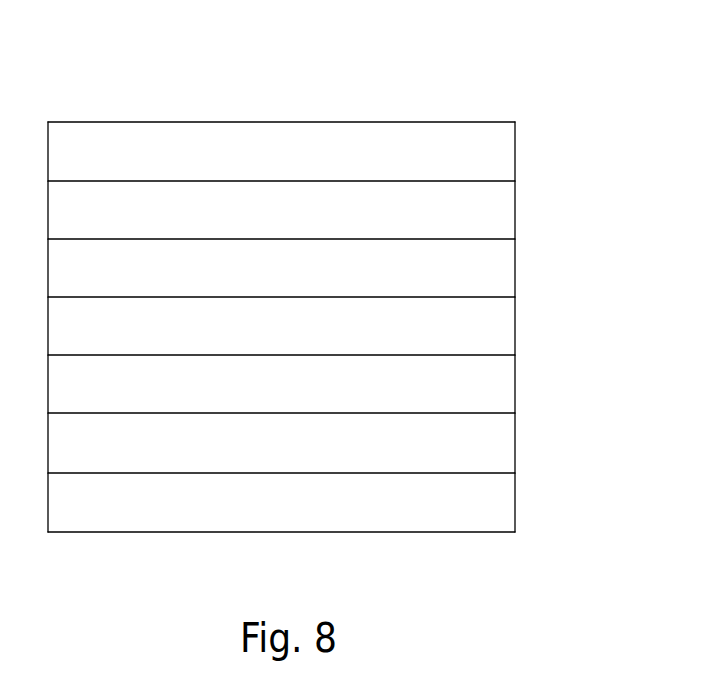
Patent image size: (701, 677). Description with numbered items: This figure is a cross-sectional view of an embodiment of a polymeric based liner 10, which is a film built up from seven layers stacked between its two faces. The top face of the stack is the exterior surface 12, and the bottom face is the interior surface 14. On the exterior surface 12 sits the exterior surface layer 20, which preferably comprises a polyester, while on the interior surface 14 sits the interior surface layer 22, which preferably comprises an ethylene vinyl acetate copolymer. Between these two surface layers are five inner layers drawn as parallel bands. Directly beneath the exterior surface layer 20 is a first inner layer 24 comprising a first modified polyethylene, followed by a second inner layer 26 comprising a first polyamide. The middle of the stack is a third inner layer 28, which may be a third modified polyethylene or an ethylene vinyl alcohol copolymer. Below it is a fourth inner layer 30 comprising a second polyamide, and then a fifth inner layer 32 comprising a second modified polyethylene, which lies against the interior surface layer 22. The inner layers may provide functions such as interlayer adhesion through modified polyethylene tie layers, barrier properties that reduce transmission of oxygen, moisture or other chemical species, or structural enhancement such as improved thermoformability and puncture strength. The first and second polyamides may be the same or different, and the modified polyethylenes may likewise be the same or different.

The polymeric based liner 10 is at (437, 78).
The exterior surface 12 is at (158, 122).
The interior surface 14 is at (215, 535).
The exterior surface layer 20 is at (489, 152).
The interior surface layer 22 is at (493, 507).
The first inner layer 24 is at (489, 215).
The second inner layer 26 is at (492, 273).
The third inner layer 28 is at (492, 331).
The fourth inner layer 30 is at (497, 388).
The fifth inner layer 32 is at (497, 449).